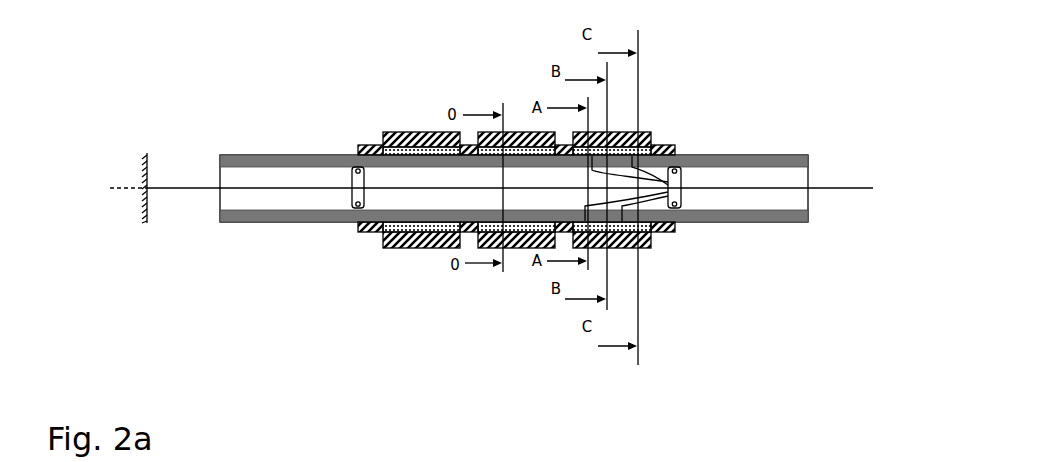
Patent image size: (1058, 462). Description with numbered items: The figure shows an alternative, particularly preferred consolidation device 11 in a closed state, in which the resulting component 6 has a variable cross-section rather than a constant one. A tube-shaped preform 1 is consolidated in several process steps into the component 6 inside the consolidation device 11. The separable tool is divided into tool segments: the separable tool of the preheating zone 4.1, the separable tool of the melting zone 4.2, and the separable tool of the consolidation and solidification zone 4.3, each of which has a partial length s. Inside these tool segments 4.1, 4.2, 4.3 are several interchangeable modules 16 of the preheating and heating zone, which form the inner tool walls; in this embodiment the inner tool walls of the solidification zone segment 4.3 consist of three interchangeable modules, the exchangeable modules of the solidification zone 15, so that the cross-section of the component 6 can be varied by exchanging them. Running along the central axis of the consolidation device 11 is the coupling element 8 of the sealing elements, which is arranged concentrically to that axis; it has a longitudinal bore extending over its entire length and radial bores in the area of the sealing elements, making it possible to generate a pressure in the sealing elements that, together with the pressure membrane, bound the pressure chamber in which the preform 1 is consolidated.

The preform 1 is at (241, 158).
The consolidation device 11 is at (323, 256).
The interchangeable modules 16 is at (442, 134).
The separable tool of the preheating zone 4.1 is at (383, 247).
The separable tool of the melting zone 4.2 is at (518, 250).
The separable tool of the consolidation and solidification zone 4.3 is at (660, 136).
The component 6 is at (712, 160).
The coupling element of sealing elements 8 is at (773, 340).
The exchangeable modules of the solidification zone 15 is at (681, 188).